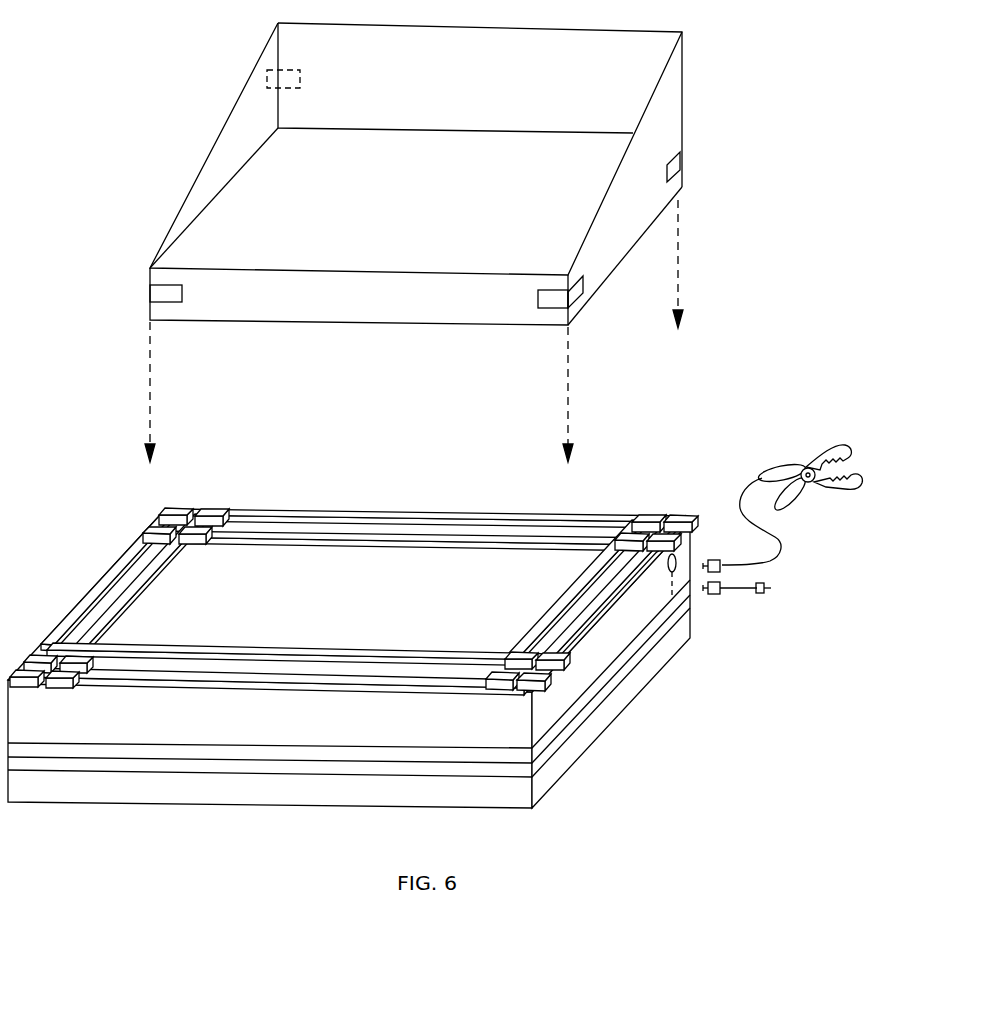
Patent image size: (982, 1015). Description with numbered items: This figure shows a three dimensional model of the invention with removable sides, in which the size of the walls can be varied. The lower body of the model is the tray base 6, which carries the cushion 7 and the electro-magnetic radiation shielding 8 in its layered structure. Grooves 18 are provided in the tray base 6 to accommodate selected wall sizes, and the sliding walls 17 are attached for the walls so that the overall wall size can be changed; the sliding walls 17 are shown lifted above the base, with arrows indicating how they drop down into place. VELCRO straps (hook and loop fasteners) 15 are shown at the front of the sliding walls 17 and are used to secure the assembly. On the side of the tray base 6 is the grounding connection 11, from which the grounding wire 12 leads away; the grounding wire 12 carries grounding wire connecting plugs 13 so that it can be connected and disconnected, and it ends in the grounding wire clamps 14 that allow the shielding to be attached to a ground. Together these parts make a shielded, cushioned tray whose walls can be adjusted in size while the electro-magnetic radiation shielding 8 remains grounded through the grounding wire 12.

The tray base 6 is at (353, 601).
The cushion 7 is at (548, 792).
The electro-magnetic radiation shielding 8 is at (349, 718).
The grounding connection 11 is at (686, 528).
The grounding wire 12 is at (740, 585).
The grounding wire connecting plugs 13 is at (757, 598).
The grounding wire clamps 14 is at (809, 450).
The VELCRO straps (hook and loop fasteners) 15 is at (150, 292).
The sliding walls 17 is at (414, 242).
The grooves 18 is at (118, 581).